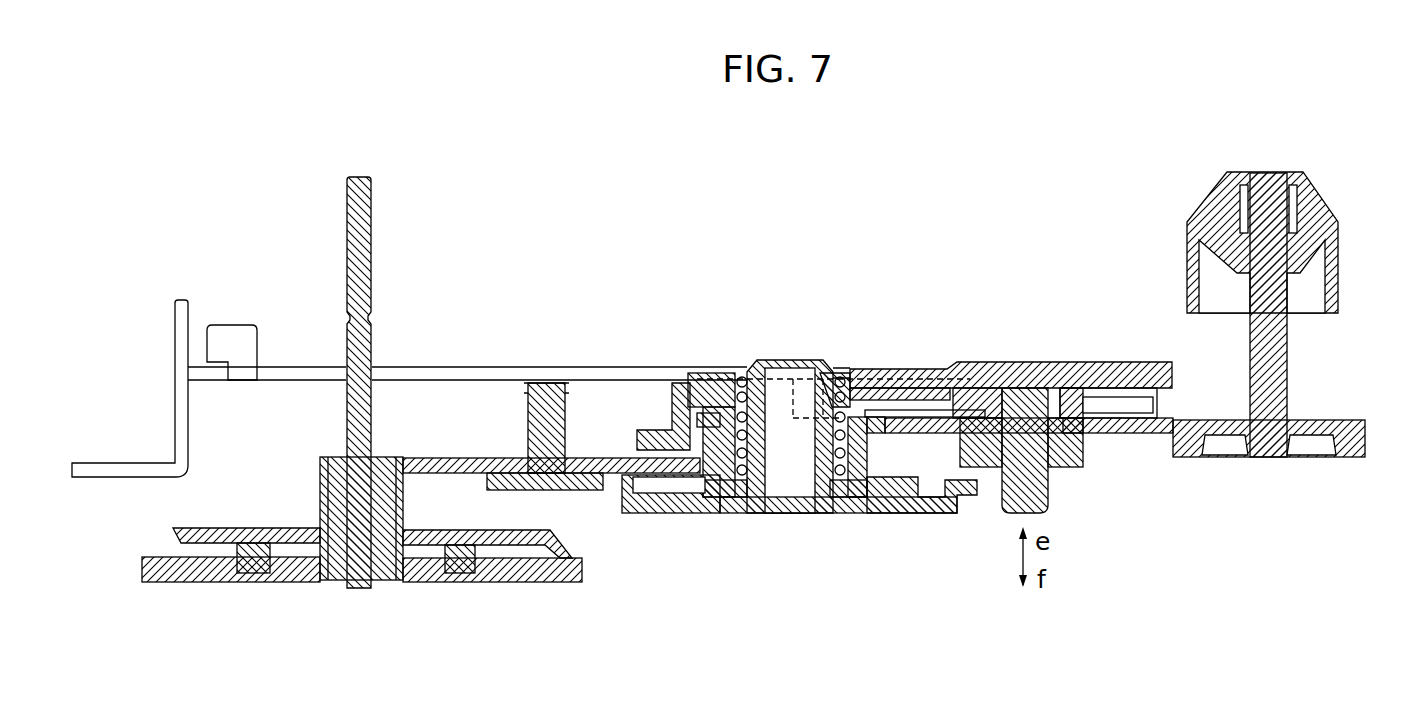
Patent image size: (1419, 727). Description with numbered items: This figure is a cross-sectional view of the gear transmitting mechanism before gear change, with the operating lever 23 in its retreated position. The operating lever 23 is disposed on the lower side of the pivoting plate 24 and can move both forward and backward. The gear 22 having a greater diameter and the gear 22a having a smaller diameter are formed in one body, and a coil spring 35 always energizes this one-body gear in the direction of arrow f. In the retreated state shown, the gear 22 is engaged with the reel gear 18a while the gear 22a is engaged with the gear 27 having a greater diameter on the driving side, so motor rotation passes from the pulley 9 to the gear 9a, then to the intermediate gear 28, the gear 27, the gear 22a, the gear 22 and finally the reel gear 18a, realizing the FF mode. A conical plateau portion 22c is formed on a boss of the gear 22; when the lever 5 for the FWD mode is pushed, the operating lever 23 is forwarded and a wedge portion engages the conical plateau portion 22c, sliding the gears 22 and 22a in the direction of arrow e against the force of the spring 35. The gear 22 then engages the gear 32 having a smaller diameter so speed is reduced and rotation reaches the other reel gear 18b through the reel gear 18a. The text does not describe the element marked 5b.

The lever for the FWD mode 5 is at (118, 463).
The lever arm 5b is at (877, 425).
The pulley 9 is at (567, 583).
The gear 9a is at (403, 497).
The reel gear 18a is at (1342, 457).
The reel gear 18b is at (1274, 351).
The gear having a greater diameter 22 is at (1143, 437).
The gear having a smaller diameter 22a is at (1088, 468).
The conical plateau portion 22c is at (1087, 433).
The operating lever 23 is at (1099, 404).
The pivoting plate 24 is at (973, 362).
The gear having a greater diameter 27 is at (727, 505).
The intermediate gear 28 is at (460, 458).
The gear having a smaller diameter 32 is at (692, 383).
The coil spring 35 is at (1047, 387).